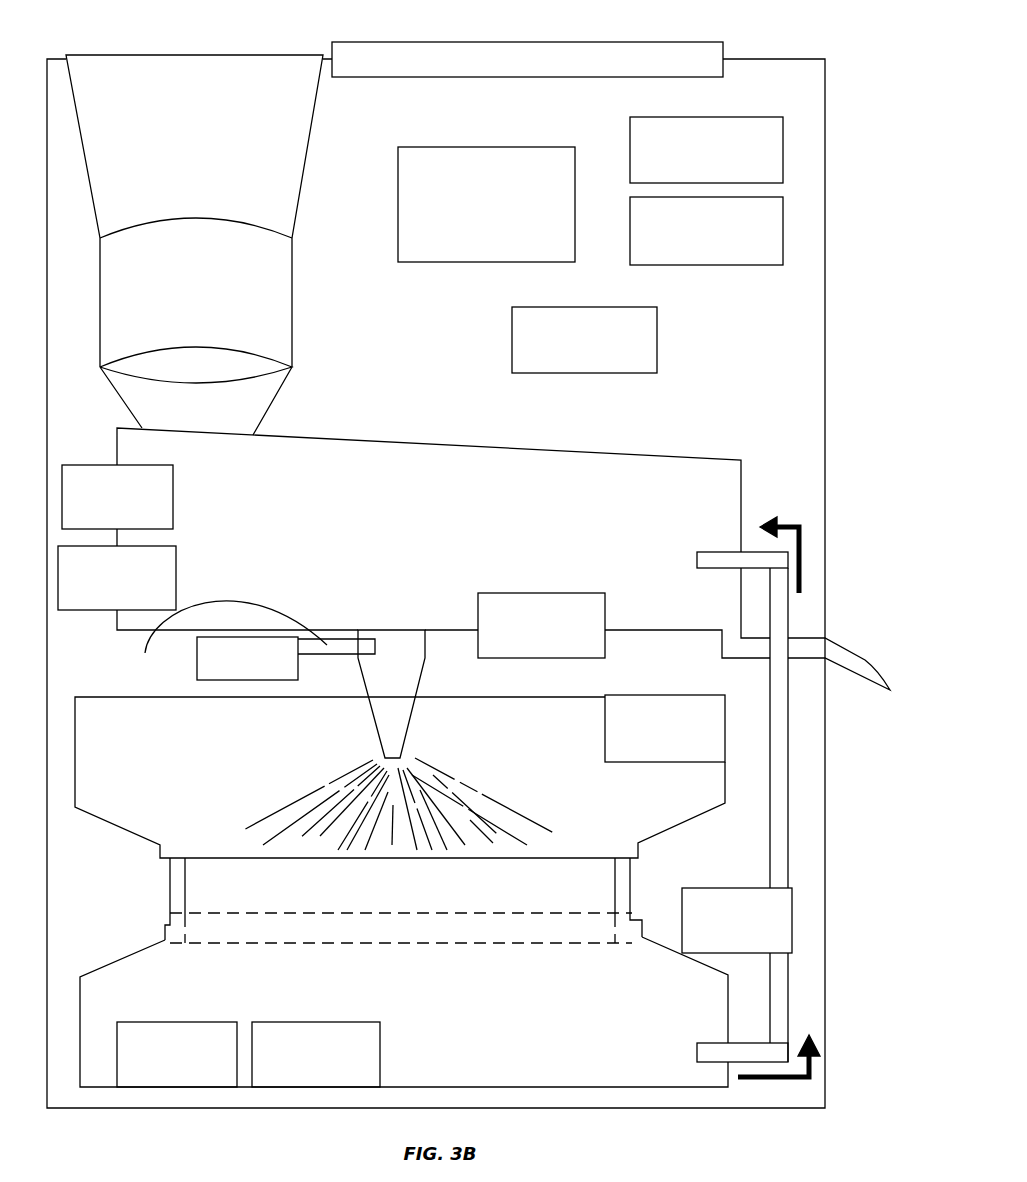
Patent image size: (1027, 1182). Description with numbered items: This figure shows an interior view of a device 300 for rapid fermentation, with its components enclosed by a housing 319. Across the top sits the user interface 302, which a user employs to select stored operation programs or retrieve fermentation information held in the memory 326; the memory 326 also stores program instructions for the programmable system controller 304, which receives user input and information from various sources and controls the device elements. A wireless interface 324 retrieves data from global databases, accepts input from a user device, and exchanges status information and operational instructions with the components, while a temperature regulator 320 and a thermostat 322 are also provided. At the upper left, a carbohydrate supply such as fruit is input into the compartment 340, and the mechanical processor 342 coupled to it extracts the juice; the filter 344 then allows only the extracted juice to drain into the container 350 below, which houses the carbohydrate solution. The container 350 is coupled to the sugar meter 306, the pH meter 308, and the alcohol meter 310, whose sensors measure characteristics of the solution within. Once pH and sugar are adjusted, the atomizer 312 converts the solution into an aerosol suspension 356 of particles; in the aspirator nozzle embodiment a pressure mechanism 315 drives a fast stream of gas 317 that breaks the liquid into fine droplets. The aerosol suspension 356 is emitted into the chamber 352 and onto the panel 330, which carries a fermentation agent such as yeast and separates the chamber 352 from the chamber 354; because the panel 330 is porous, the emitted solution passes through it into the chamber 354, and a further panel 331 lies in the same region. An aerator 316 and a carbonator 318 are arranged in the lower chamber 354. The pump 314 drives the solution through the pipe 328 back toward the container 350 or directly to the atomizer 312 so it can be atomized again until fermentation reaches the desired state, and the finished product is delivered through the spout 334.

The device 300 is at (842, 69).
The user interface 302 is at (527, 59).
The programmable system controller 304 is at (486, 204).
The sugar meter 306 is at (117, 497).
The pH meter 308 is at (117, 578).
The alcohol meter 310 is at (541, 625).
The atomizer 312 is at (407, 670).
The pump 314 is at (737, 920).
The pressure mechanism 315 is at (286, 658).
The aerator 316 is at (177, 1054).
The gas 317 is at (207, 641).
The carbonator 318 is at (316, 1054).
The housing 319 is at (650, 1108).
The temperature regulator 320 is at (584, 340).
The thermostat 322 is at (665, 728).
The wireless interface 324 is at (706, 150).
The memory 326 is at (706, 231).
The pipe 328 is at (780, 847).
The panel 330 is at (218, 891).
The panel 331 is at (210, 932).
The spout 334 is at (750, 650).
The compartment 340 is at (194, 146).
The mechanical processor 342 is at (196, 302).
The filter 344 is at (196, 391).
The container 350 is at (643, 448).
The chamber 352 is at (400, 777).
The chamber 354 is at (404, 1012).
The aerosol particles 356 is at (245, 819).